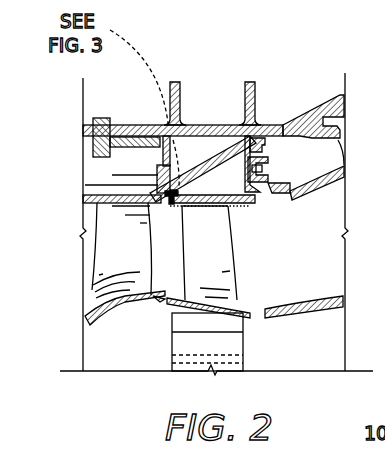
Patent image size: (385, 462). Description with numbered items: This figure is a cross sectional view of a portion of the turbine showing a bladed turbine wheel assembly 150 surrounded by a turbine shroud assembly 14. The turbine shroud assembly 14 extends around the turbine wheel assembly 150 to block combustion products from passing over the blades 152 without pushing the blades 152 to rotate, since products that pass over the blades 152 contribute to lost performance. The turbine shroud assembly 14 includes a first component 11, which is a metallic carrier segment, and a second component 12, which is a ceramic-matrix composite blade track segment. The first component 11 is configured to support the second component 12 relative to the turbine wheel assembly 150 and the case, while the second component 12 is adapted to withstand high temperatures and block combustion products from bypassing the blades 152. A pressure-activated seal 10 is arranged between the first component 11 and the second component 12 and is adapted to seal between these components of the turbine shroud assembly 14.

The pressure-activated seal 10 is at (173, 201).
The first component 11 is at (207, 155).
The second component 12 is at (217, 191).
The turbine shroud assembly 14 is at (260, 153).
The turbine wheel assembly 150 is at (257, 288).
The blades 152 is at (202, 239).